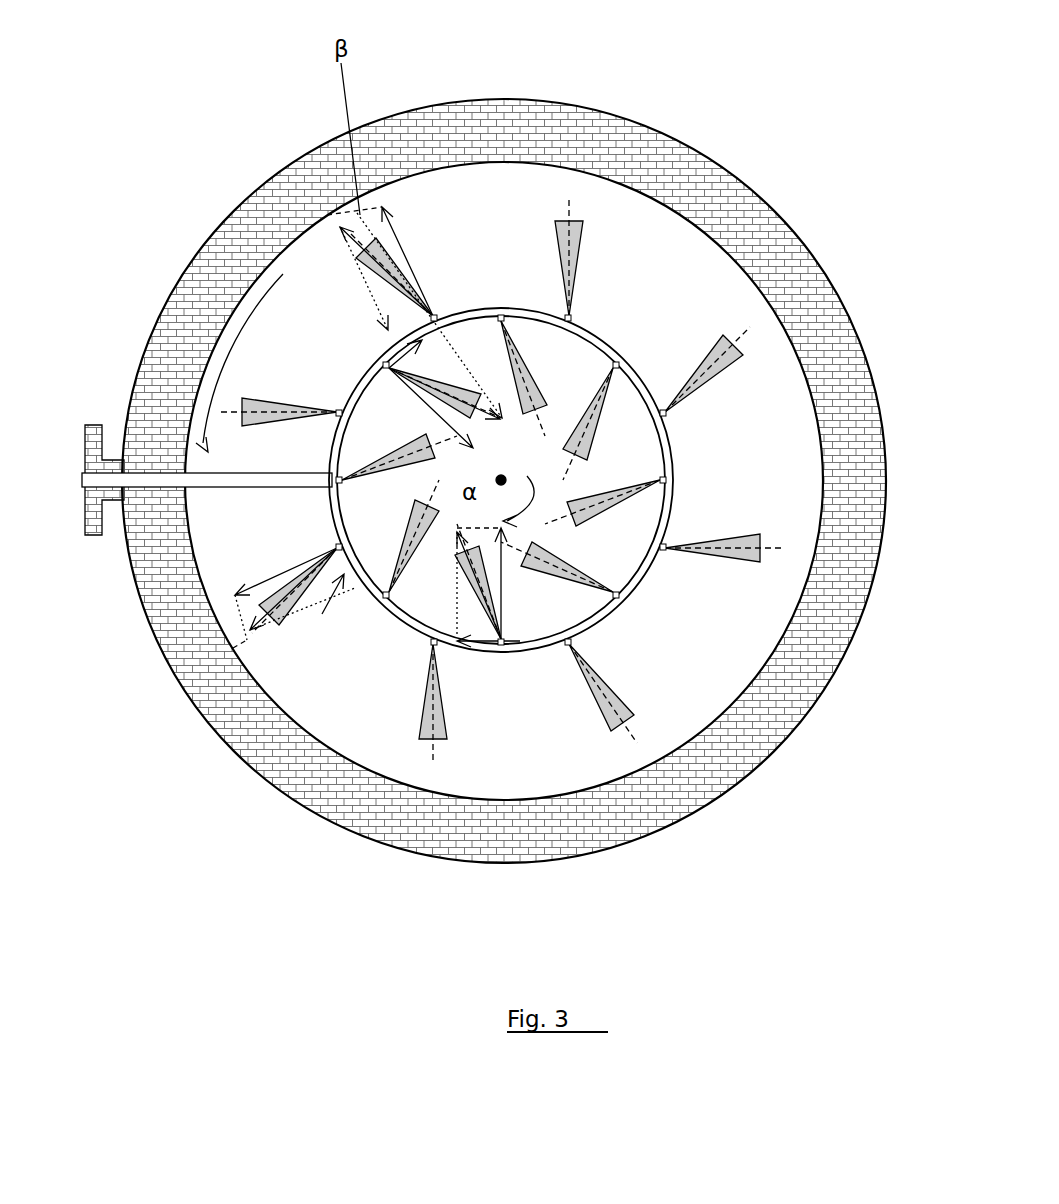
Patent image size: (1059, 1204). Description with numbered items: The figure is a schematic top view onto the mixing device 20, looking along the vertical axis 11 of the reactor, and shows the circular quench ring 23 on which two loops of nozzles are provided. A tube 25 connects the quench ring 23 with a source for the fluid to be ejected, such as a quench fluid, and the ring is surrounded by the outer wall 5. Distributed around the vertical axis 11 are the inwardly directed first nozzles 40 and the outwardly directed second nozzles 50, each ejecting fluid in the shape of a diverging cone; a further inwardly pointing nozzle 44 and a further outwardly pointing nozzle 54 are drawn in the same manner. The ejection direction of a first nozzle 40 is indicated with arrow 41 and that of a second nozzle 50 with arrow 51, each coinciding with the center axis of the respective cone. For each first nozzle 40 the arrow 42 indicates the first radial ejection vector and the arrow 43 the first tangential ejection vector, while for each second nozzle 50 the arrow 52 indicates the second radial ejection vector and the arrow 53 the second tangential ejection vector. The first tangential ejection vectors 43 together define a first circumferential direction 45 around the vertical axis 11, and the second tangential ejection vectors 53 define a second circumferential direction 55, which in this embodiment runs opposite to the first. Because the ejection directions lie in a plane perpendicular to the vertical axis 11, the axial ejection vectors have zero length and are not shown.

The furnace wall 5 is at (485, 432).
The vertical axis 11 is at (505, 477).
The mixing device 20 is at (617, 267).
The quench ring 23 is at (603, 350).
The tube 25 is at (107, 478).
The first nozzle 40 is at (503, 317).
The first ejection direction 41 is at (452, 400).
The first radial ejection vector 42 is at (480, 395).
The first tangential ejection vector 43 is at (400, 365).
The inner nozzle 44 is at (533, 400).
The first circumferential direction 45 is at (533, 505).
The second nozzle 50 is at (668, 414).
The second ejection direction 51 is at (360, 237).
The second radial ejection vector 52 is at (413, 277).
The second tangential ejection vector 53 is at (410, 320).
The outer nozzle 54 is at (738, 342).
The second circumferential direction 55 is at (247, 328).